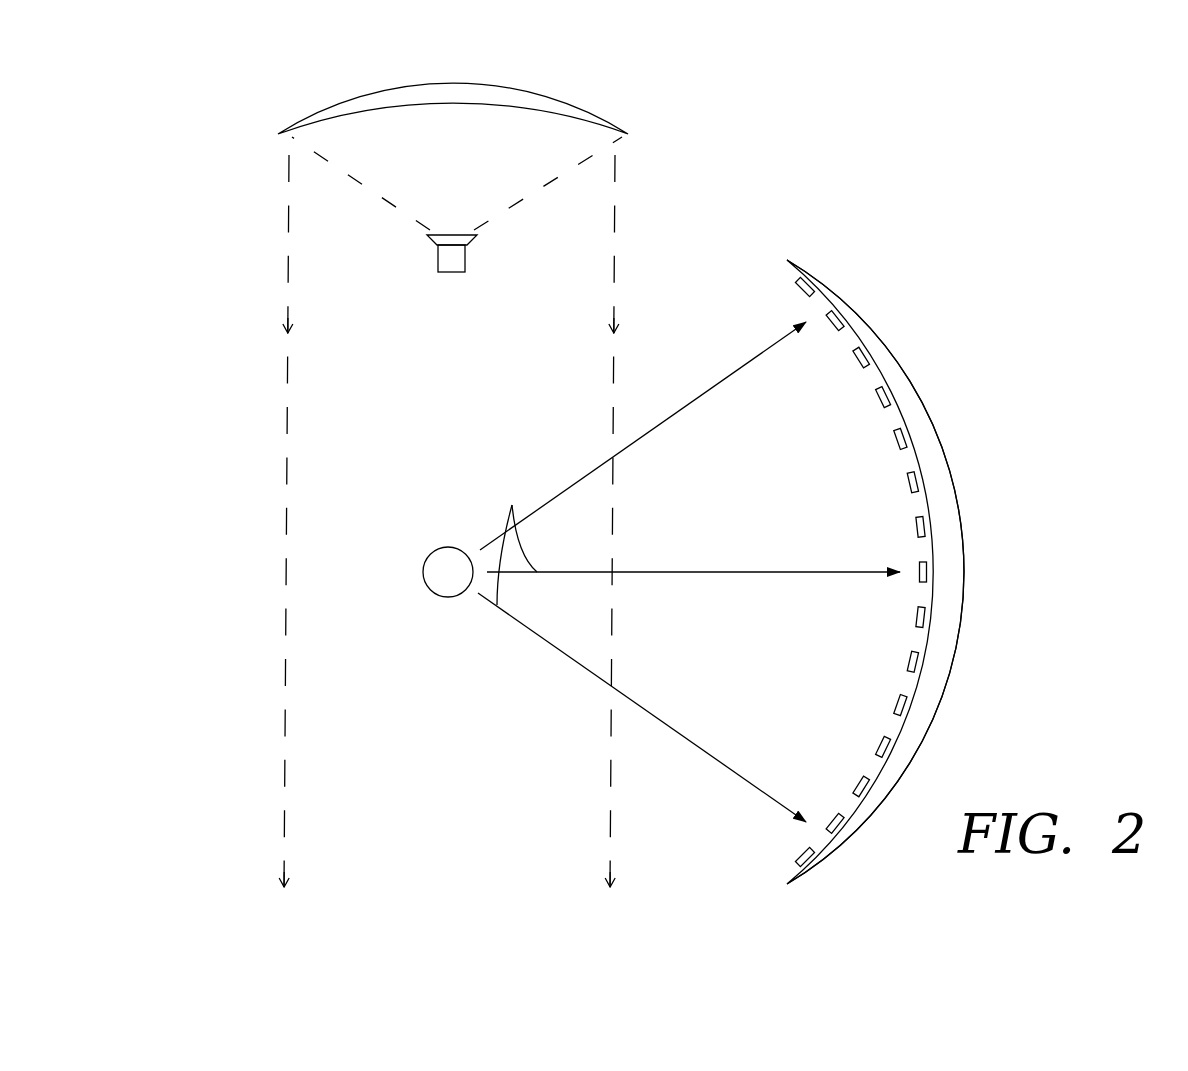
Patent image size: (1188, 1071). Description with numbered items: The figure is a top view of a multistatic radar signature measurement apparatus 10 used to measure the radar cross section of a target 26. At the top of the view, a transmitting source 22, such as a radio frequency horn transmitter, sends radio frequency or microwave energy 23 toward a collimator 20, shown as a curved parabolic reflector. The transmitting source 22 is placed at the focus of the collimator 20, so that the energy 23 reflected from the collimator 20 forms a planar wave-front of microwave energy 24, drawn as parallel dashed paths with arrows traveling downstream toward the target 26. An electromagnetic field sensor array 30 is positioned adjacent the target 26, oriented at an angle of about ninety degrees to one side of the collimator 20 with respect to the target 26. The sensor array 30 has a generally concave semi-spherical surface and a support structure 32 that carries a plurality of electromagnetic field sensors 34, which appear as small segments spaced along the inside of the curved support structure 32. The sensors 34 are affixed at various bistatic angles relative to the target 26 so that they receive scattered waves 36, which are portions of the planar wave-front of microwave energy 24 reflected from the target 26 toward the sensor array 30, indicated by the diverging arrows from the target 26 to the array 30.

The multistatic radar signature measurement apparatus 10 is at (822, 184).
The collimator 20 is at (391, 97).
The transmitting source 22 is at (449, 232).
The radio frequency or microwave energy 23 is at (355, 181).
The planar wave-front of microwave energy 24 is at (286, 427).
The target 26 is at (430, 572).
The electromagnetic field sensor array 30 is at (910, 374).
The support structure 32 is at (932, 449).
The electromagnetic field sensors 34 is at (892, 720).
The scattered waves 36 is at (512, 504).